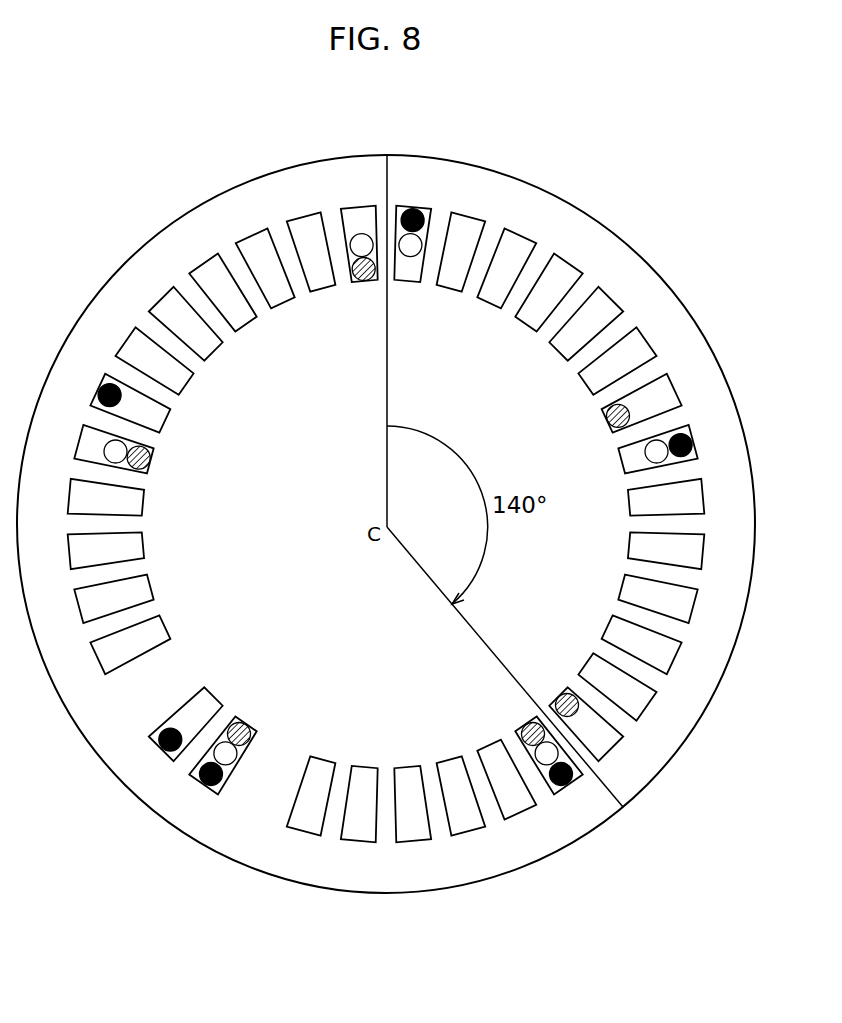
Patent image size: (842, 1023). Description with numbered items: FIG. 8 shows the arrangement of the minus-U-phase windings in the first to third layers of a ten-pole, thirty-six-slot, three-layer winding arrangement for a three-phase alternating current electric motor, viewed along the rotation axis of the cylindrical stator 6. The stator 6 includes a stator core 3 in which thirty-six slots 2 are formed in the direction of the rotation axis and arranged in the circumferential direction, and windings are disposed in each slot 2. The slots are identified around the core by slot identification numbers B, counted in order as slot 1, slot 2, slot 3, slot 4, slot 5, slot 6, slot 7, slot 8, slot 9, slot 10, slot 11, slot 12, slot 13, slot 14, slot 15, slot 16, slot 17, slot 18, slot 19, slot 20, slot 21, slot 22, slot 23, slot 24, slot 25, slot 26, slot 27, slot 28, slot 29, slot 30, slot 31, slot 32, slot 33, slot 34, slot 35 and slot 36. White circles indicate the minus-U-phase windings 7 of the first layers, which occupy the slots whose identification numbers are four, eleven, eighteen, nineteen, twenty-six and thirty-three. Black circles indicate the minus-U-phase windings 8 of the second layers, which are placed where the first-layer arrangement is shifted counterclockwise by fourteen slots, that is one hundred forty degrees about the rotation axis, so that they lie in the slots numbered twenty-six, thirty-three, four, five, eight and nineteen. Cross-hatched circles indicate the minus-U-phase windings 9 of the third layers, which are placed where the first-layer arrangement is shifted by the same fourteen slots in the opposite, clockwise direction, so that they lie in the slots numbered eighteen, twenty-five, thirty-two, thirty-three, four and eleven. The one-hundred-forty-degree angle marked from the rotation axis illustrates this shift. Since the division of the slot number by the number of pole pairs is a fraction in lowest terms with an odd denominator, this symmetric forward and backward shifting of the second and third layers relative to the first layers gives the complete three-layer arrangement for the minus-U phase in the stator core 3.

The slot 1 is at (361, 820).
The slot 2 is at (524, 317).
The stator core 3 is at (440, 171).
The winding 4 is at (223, 764).
The slot 5 is at (182, 730).
The stator 6 is at (675, 192).
The -U-phase winding in first layer 7 is at (410, 258).
The -U-phase winding in second layer 8 is at (128, 403).
The -U-phase winding in third layer 9 is at (361, 280).
The slot 10 is at (89, 499).
The slot 11 is at (100, 451).
The slot 12 is at (118, 403).
The slot 13 is at (145, 357).
The slot 14 is at (179, 318).
The slot 15 is at (219, 284).
The slot 16 is at (264, 257).
The slot 17 is at (313, 238).
The slot 18 is at (361, 227).
The slot 19 is at (410, 227).
The slot 20 is at (458, 238).
The slot 21 is at (507, 257).
The slot 22 is at (552, 284).
The slot 23 is at (592, 318).
The slot 24 is at (626, 357).
The slot 25 is at (653, 403).
The slot 26 is at (672, 451).
The slot 27 is at (683, 499).
The slot 28 is at (683, 548).
The slot 29 is at (672, 596).
The slot 30 is at (653, 644).
The slot 31 is at (626, 690).
The slot 32 is at (592, 730).
The slot 33 is at (552, 764).
The slot 34 is at (507, 791).
The slot 35 is at (458, 809).
The slot 36 is at (410, 820).
The slot identification number B is at (548, 201).